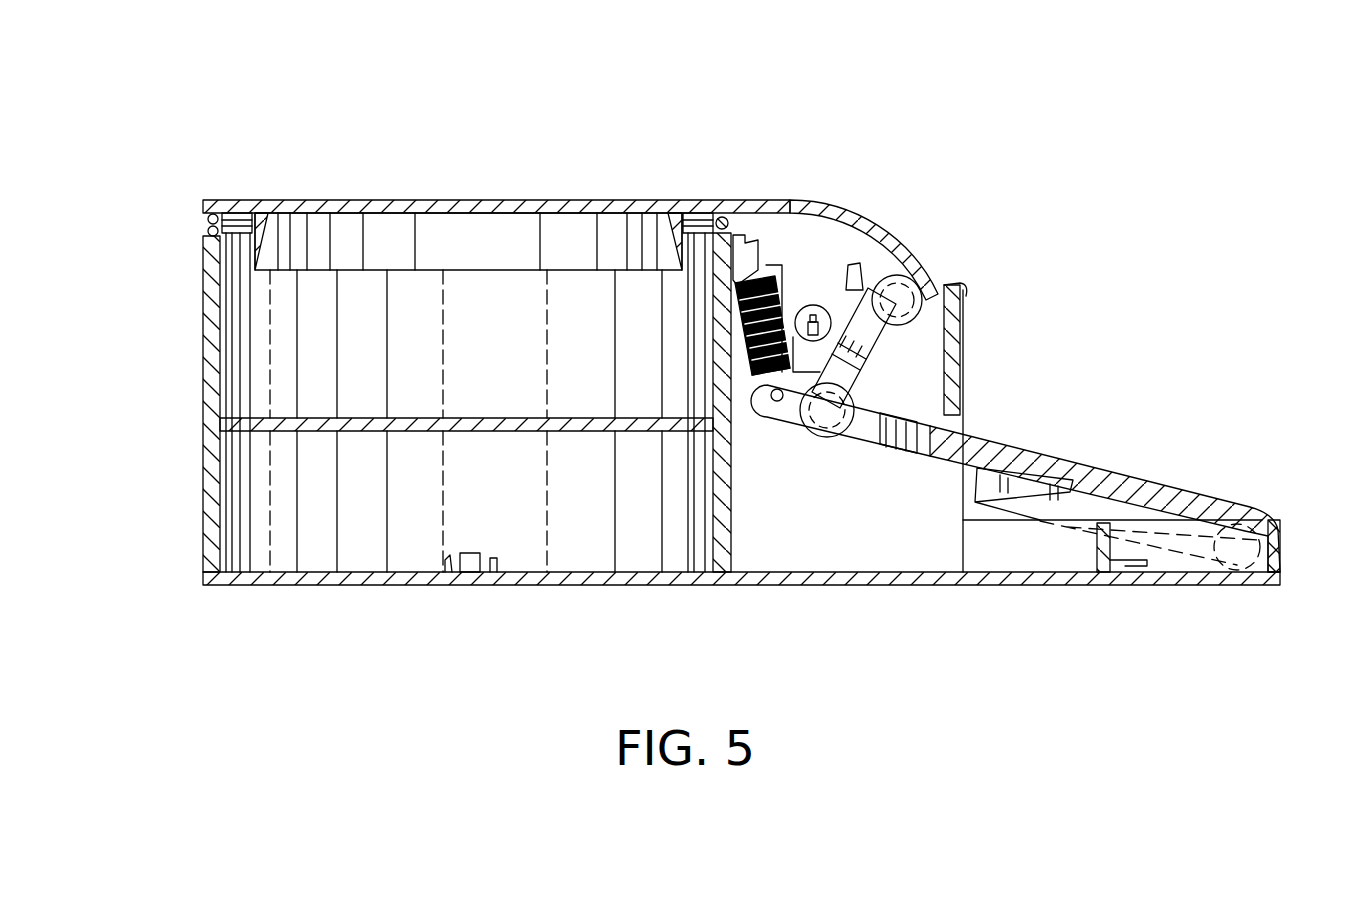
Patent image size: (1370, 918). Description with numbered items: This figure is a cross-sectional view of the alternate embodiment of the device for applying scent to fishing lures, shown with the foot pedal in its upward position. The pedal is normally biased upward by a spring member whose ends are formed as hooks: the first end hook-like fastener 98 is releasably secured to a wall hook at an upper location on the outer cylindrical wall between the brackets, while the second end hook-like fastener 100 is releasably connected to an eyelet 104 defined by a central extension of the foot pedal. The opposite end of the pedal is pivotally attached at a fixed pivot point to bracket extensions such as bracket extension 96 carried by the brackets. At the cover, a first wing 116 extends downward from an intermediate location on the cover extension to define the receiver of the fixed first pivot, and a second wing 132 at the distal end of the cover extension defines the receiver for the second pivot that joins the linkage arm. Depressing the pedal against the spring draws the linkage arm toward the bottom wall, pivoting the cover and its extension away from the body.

The bracket extension 96 is at (1058, 547).
The first end hook-like fastener 98 is at (740, 244).
The second end hook-like fastener 100 is at (765, 375).
The eyelet 104 is at (776, 398).
The first wing 116 is at (815, 303).
The second wing 132 is at (877, 267).